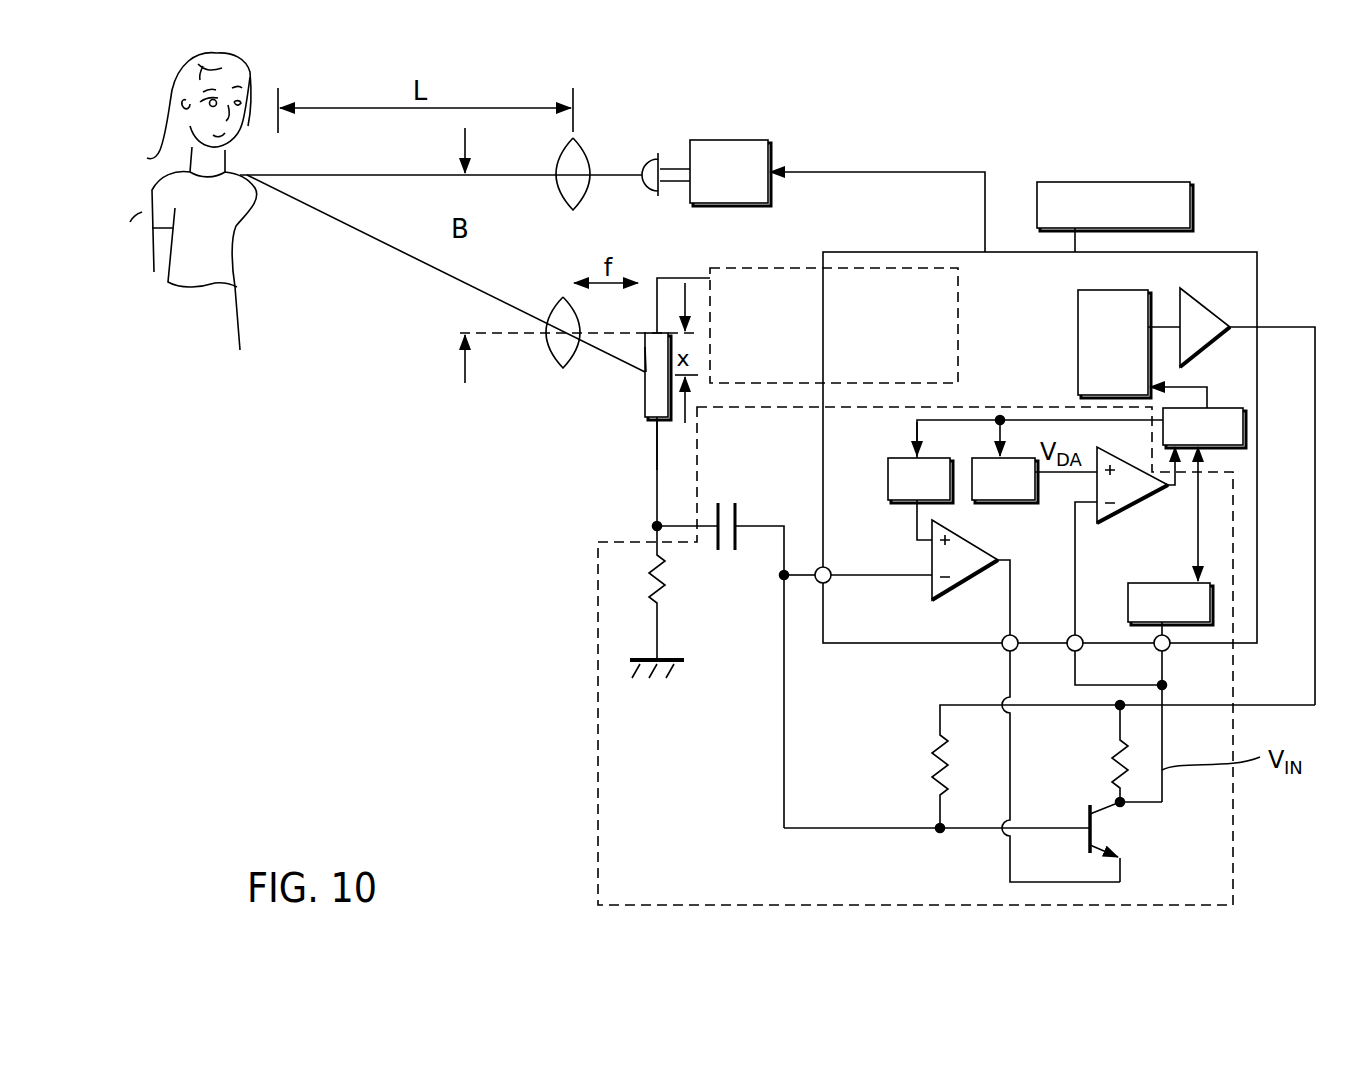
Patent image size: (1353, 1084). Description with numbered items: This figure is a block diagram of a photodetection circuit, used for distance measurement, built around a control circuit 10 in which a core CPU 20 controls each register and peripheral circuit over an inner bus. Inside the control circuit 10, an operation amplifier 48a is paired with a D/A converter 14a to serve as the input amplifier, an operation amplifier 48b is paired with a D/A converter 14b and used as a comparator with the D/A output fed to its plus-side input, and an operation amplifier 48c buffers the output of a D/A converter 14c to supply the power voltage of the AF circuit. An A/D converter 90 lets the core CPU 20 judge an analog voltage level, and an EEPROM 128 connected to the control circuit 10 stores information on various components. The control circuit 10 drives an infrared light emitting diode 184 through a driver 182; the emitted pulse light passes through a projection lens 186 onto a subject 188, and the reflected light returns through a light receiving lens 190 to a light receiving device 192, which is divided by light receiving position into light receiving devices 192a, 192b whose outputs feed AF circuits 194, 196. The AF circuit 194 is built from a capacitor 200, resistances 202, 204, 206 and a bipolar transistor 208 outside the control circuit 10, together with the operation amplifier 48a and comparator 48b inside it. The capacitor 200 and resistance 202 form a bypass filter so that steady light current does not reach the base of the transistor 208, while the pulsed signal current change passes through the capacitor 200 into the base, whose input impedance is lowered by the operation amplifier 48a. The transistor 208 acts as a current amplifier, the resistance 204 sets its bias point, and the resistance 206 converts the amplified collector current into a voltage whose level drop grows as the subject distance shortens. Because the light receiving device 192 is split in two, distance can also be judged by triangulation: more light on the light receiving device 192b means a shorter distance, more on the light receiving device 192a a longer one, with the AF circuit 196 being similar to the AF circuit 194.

The control circuit 10 is at (1222, 252).
The D/A converter 14a is at (886, 484).
The D/A converter 14b is at (1006, 502).
The D/A converter 14c is at (1078, 312).
The core CPU 20 is at (1232, 408).
The operation amplifier 48a is at (966, 590).
The operation amplifier 48b is at (1128, 510).
The operation amplifier 48c is at (1207, 305).
The A/D converter 90 is at (1212, 602).
The EEPROM 128 is at (1140, 180).
The driver 182 is at (758, 140).
The infrared light emitting diode 184 is at (648, 155).
The projection lens 186 is at (585, 138).
The subject 188 is at (150, 200).
The light receiving lens 190 is at (547, 345).
The light receiving device 192 is at (628, 396).
The light receiving device 192a is at (646, 420).
The light receiving device 192b is at (645, 347).
The AF circuit 194 is at (898, 905).
The AF circuit 196 is at (760, 268).
The capacitor 200 is at (724, 556).
The resistance 202 is at (640, 590).
The resistance 204 is at (932, 776).
The resistance 206 is at (1112, 768).
The bipolar transistor 208 is at (1115, 838).